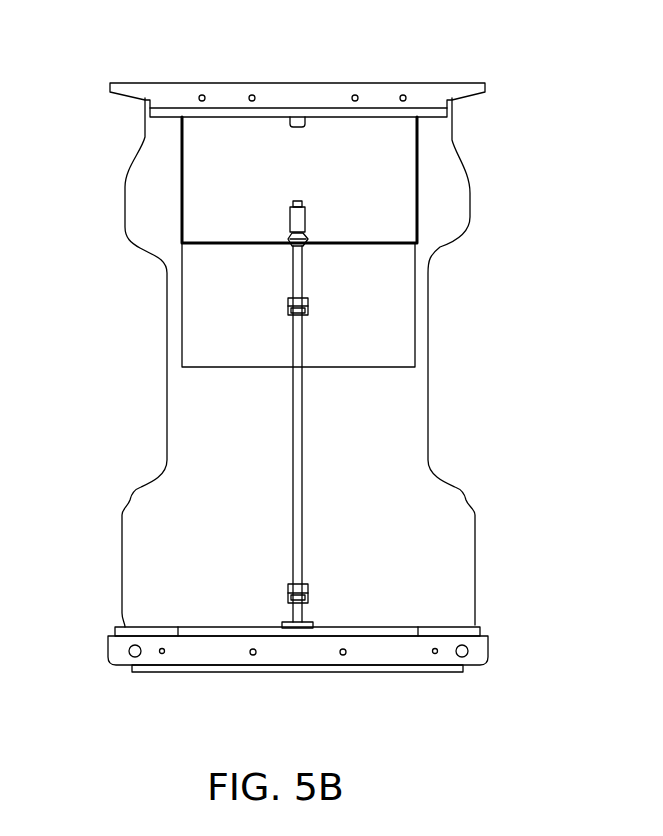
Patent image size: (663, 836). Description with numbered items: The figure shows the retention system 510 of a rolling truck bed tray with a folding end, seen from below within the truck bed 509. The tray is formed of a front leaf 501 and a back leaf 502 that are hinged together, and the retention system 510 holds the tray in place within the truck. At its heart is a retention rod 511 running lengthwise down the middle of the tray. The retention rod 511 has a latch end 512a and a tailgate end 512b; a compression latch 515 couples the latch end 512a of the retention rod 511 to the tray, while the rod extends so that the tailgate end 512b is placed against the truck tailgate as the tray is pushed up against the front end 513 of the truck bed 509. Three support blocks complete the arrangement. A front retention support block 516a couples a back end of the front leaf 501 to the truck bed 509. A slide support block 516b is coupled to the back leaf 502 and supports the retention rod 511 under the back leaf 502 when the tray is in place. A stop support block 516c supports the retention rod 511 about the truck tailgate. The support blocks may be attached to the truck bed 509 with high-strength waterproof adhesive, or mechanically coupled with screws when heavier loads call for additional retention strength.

The retention system 510 is at (545, 54).
The front leaf 501 is at (407, 193).
The back leaf 502 is at (402, 318).
The truck bed 509 is at (445, 518).
The retention rod 511 is at (293, 518).
The latch end 512a is at (291, 242).
The tailgate end 512b is at (282, 625).
The front end 513 is at (295, 625).
The compression latch 515 is at (292, 232).
The front retention support block 516a is at (293, 118).
The slide support block 516b is at (288, 303).
The stop support block 516c is at (310, 592).